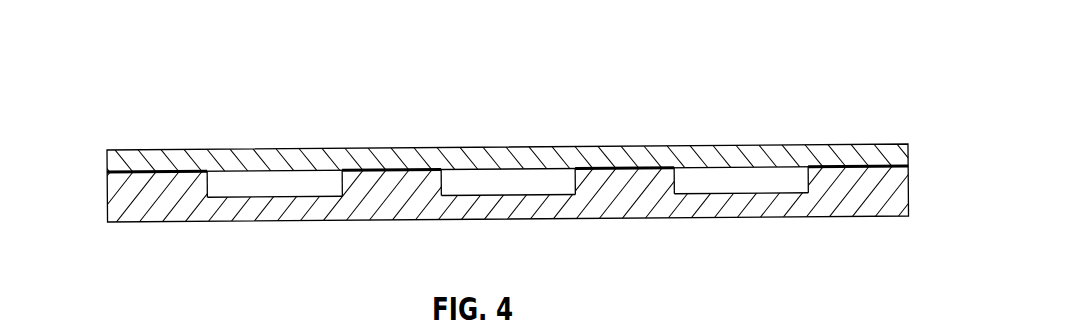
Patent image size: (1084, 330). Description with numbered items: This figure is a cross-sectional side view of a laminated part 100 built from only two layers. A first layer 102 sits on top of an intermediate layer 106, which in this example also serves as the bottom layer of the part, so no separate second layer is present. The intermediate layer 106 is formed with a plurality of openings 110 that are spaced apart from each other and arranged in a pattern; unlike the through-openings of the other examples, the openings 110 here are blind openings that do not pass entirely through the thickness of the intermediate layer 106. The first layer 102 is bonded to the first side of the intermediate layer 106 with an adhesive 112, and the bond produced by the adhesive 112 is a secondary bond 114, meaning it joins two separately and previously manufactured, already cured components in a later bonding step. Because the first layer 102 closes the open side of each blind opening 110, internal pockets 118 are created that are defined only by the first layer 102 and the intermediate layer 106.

The laminated part 100 is at (847, 61).
The first layer 102 is at (117, 162).
The intermediate layer 106 is at (118, 195).
The openings 110 is at (208, 185).
The adhesive 112 is at (150, 170).
The secondary bond 114 is at (182, 162).
The internal pockets 118 is at (283, 188).